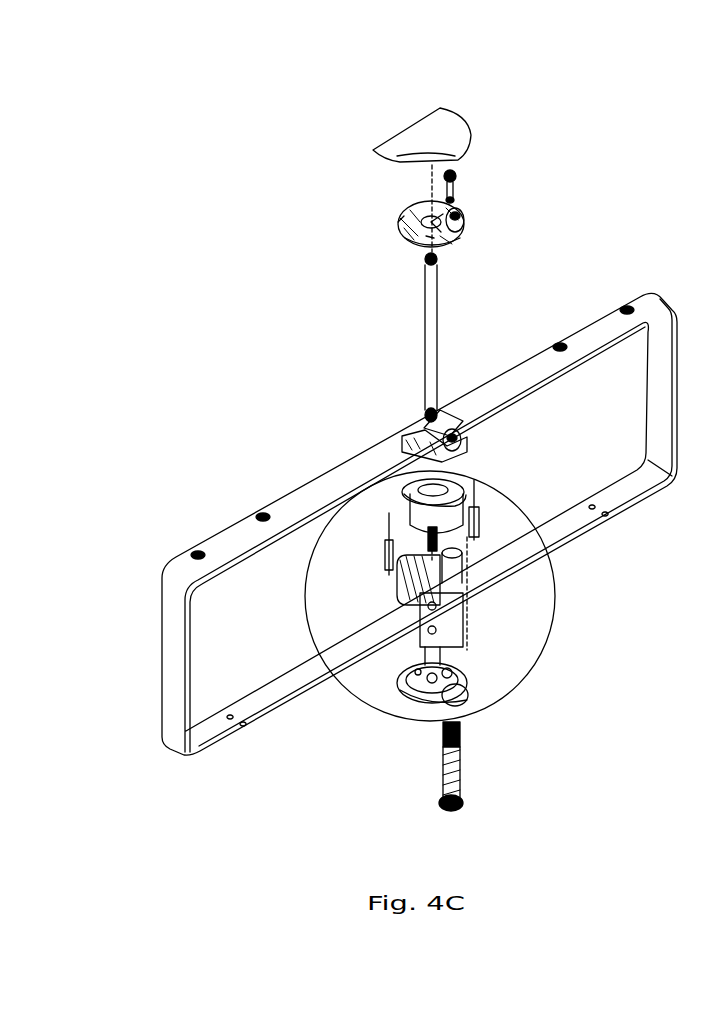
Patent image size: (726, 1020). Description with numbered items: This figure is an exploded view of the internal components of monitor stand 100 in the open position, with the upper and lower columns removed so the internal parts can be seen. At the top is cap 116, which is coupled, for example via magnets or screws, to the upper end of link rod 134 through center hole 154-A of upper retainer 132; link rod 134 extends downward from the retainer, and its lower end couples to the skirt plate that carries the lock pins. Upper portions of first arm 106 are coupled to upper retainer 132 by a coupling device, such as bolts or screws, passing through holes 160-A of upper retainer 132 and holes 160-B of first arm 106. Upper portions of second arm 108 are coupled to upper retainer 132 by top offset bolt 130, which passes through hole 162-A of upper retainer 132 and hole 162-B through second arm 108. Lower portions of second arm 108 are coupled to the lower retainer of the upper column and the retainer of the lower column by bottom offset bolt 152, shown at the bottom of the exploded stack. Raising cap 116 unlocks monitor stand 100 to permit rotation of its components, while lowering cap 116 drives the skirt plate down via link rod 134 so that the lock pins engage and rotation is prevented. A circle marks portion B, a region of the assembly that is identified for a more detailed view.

The monitor stand 100 is at (666, 129).
The first arm 106 is at (240, 540).
The second arm 108 is at (640, 308).
The cap 116 is at (412, 142).
The top offset bolt 130 is at (453, 182).
The upper retainer 132 is at (410, 212).
The link rod 134 is at (425, 318).
The bottom offset bolt 152 is at (450, 774).
The center hole 154-A is at (468, 226).
The holes 160-A is at (430, 236).
The holes 160-B is at (428, 452).
The hole 162-A is at (466, 219).
The hole 162-B is at (464, 440).
The portion B is at (550, 657).